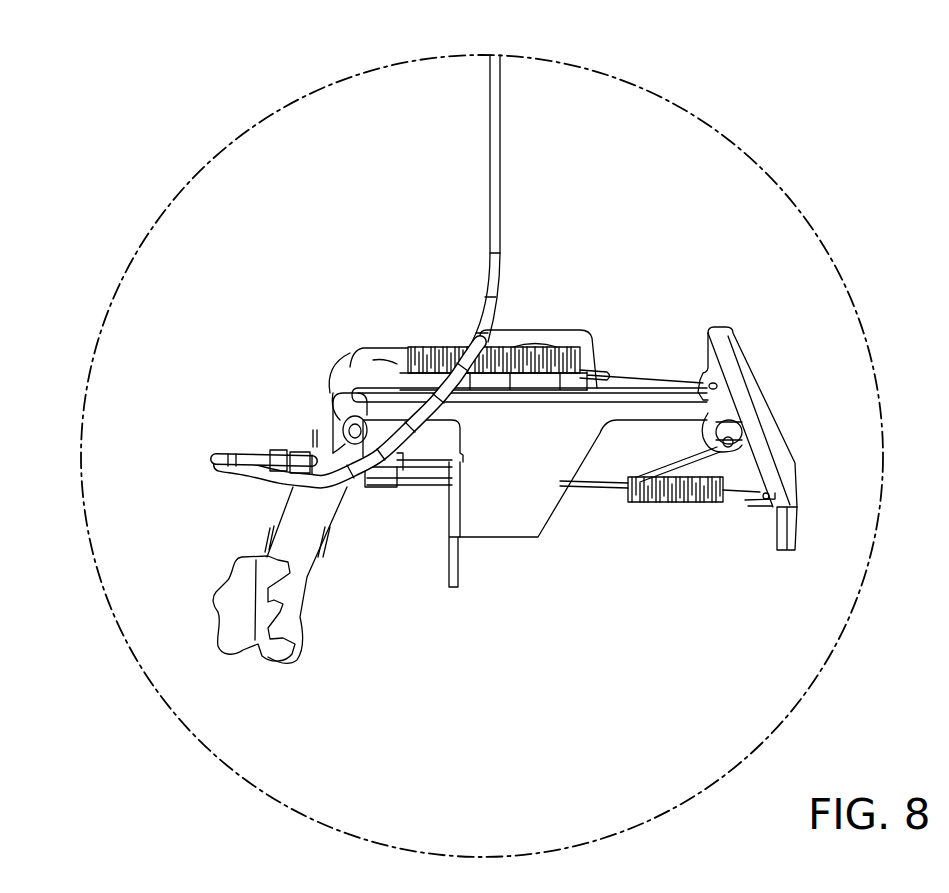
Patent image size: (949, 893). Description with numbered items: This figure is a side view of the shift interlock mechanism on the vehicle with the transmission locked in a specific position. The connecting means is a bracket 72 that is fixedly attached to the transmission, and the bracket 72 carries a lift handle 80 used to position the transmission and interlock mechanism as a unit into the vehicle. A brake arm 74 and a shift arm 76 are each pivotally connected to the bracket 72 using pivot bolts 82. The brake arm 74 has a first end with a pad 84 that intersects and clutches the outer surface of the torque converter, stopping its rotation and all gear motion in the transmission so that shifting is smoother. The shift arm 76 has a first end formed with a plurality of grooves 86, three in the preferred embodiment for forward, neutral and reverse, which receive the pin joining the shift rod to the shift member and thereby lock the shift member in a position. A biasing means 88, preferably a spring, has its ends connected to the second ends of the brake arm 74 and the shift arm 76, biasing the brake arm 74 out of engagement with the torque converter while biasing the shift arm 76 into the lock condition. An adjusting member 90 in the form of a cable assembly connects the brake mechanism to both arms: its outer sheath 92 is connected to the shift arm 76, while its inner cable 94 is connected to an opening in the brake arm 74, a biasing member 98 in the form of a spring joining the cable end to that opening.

The bracket 72 is at (537, 537).
The brake arm 74 is at (753, 360).
The shift arm 76 is at (317, 573).
The lift handle 80 is at (443, 577).
The pivot bolts 82 is at (327, 400).
The pad 84 is at (795, 528).
The grooves 86 is at (218, 592).
The biasing means 88 is at (505, 335).
The adjusting member 90 is at (233, 447).
The sheath 92 is at (377, 483).
The cable 94 is at (602, 477).
The biasing member 98 is at (663, 502).